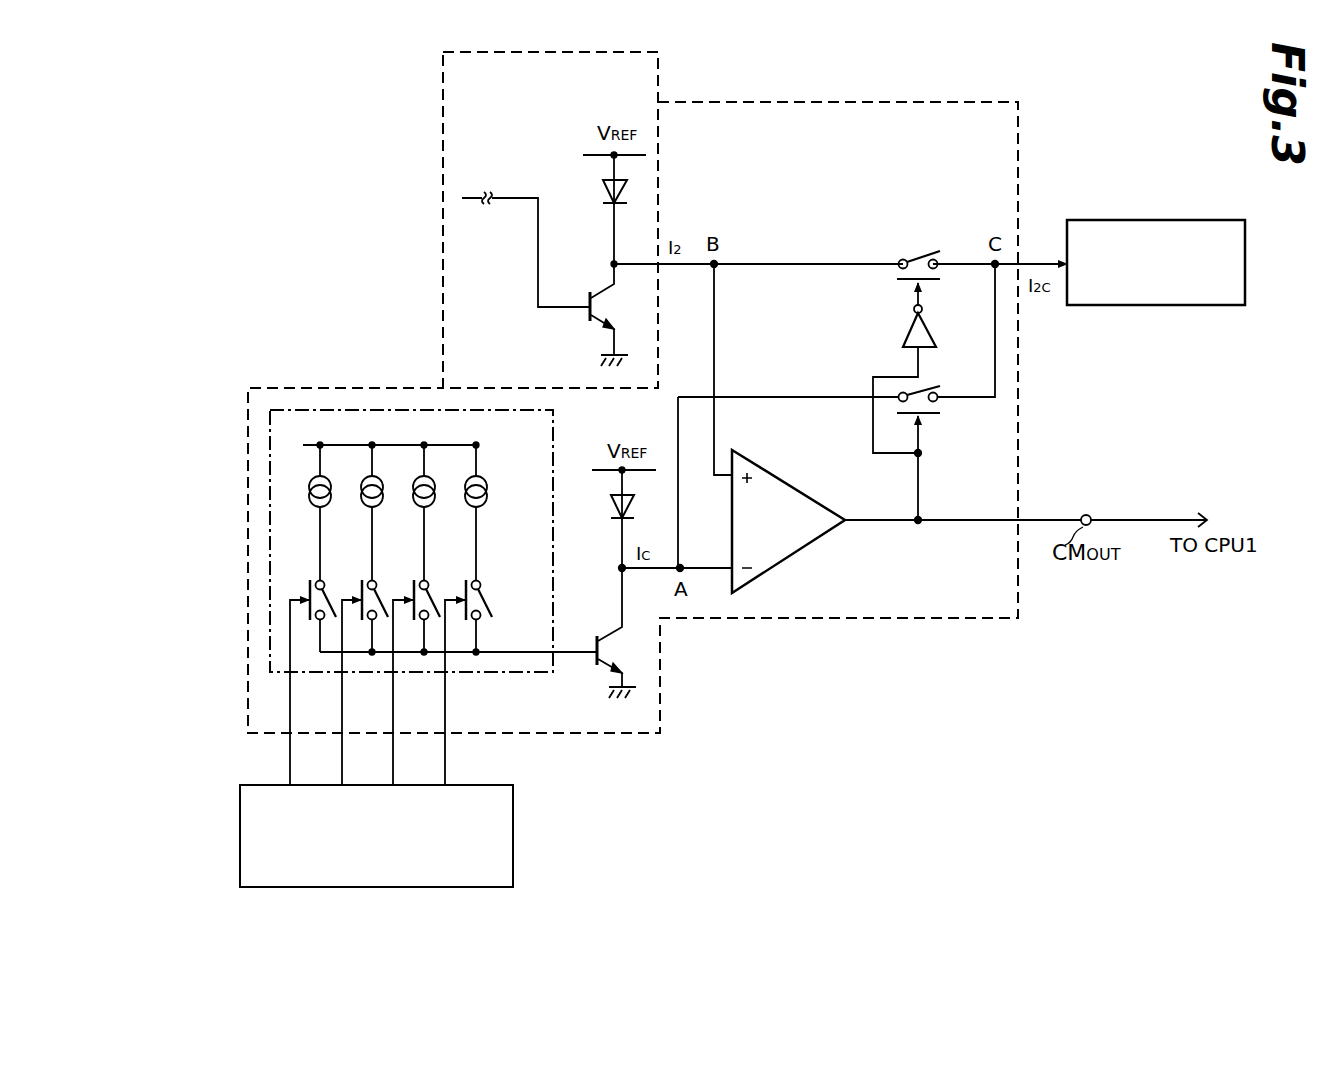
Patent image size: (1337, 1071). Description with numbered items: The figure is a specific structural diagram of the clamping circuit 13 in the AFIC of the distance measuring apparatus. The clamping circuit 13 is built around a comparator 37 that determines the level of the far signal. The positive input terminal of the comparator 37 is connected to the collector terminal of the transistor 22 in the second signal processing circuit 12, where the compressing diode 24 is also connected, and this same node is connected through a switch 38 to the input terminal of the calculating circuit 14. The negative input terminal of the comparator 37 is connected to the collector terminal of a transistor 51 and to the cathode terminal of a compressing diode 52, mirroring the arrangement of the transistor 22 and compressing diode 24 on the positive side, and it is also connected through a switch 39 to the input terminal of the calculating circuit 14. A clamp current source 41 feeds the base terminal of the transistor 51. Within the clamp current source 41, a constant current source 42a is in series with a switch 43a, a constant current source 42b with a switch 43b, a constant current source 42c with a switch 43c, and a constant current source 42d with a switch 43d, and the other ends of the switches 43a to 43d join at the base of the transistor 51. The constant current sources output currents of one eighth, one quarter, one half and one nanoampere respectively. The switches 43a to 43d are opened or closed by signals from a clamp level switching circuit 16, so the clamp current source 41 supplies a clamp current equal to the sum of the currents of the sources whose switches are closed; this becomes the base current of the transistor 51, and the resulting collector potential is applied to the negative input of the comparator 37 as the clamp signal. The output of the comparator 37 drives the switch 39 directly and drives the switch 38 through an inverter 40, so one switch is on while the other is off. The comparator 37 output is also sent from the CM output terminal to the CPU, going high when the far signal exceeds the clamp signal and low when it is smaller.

The second signal processing circuit 12 is at (440, 112).
The clamping circuit 13 is at (664, 705).
The calculating circuit 14 is at (1135, 220).
The clamp level switching circuit 16 is at (513, 832).
The transistor 22 is at (592, 321).
The compressing diode 24 is at (608, 192).
The comparator 37 is at (805, 545).
The switch 38 is at (927, 252).
The switch 39 is at (935, 416).
The inverter 40 is at (903, 331).
The clamp current source 41 is at (270, 530).
The constant current source 42a is at (349, 466).
The constant current source 42b is at (401, 466).
The constant current source 42c is at (453, 466).
The constant current source 42d is at (505, 466).
The switch 43a is at (328, 598).
The switch 43b is at (380, 598).
The switch 43c is at (432, 598).
The switch 43d is at (484, 598).
The transistor 51 is at (596, 668).
The compressing diode 52 is at (618, 506).